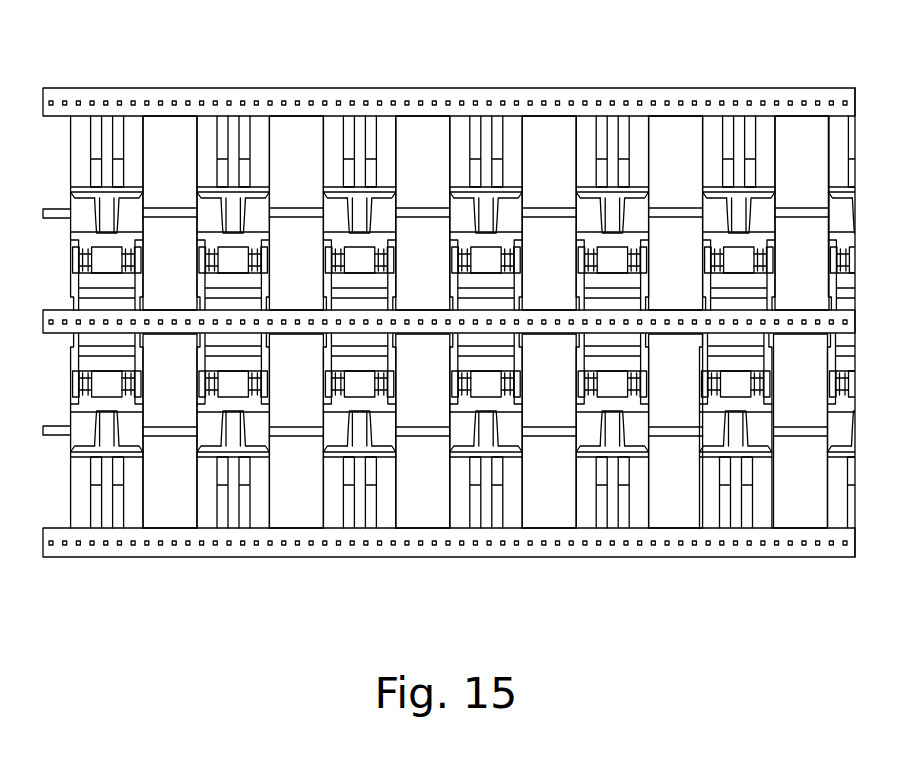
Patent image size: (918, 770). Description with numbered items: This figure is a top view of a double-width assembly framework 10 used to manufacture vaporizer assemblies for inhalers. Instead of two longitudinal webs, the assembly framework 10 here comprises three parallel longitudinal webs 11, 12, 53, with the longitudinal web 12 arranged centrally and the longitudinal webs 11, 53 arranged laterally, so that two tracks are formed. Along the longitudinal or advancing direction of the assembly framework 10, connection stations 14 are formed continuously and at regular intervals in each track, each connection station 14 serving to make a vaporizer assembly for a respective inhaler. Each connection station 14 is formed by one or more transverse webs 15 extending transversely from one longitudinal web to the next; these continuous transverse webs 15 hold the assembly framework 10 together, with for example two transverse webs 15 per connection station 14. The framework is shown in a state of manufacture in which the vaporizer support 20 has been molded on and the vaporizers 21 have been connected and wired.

The assembly framework 10 is at (433, 556).
The longitudinal web 11 is at (483, 557).
The longitudinal web 12 is at (538, 317).
The connection station 14 is at (297, 325).
The transverse web 15 is at (268, 137).
The vaporizer support 20 is at (268, 215).
The vaporizer 21 is at (482, 270).
The longitudinal web 53 is at (552, 98).